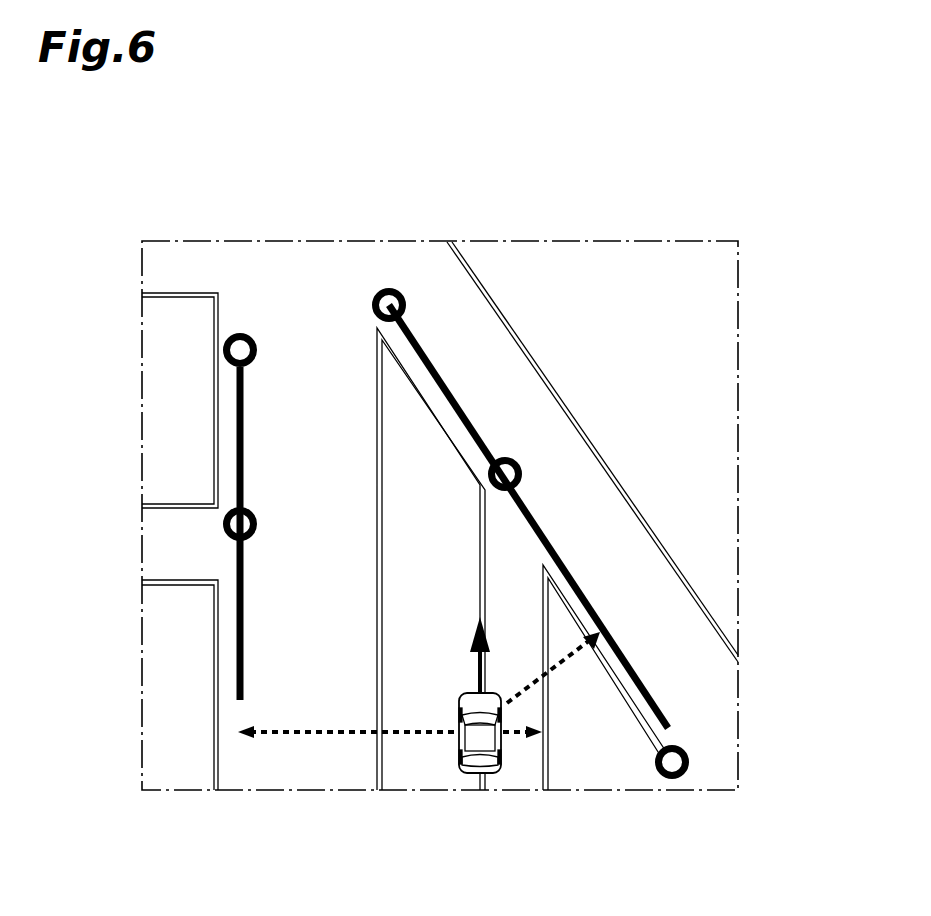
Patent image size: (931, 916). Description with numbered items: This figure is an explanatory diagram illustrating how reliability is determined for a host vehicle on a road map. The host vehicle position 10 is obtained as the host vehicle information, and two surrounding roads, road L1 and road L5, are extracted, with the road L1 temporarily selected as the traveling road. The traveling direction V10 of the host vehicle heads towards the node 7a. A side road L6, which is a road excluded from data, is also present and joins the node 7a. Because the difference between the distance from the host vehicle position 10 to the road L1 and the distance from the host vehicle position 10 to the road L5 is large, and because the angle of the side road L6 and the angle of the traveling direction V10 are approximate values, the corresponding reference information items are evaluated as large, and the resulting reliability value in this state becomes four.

The road L1 is at (283, 360).
The node 7a is at (505, 457).
The road L5 is at (590, 515).
The traveling direction V10 is at (472, 640).
The host vehicle position 10 is at (480, 752).
The side road L6 is at (517, 760).